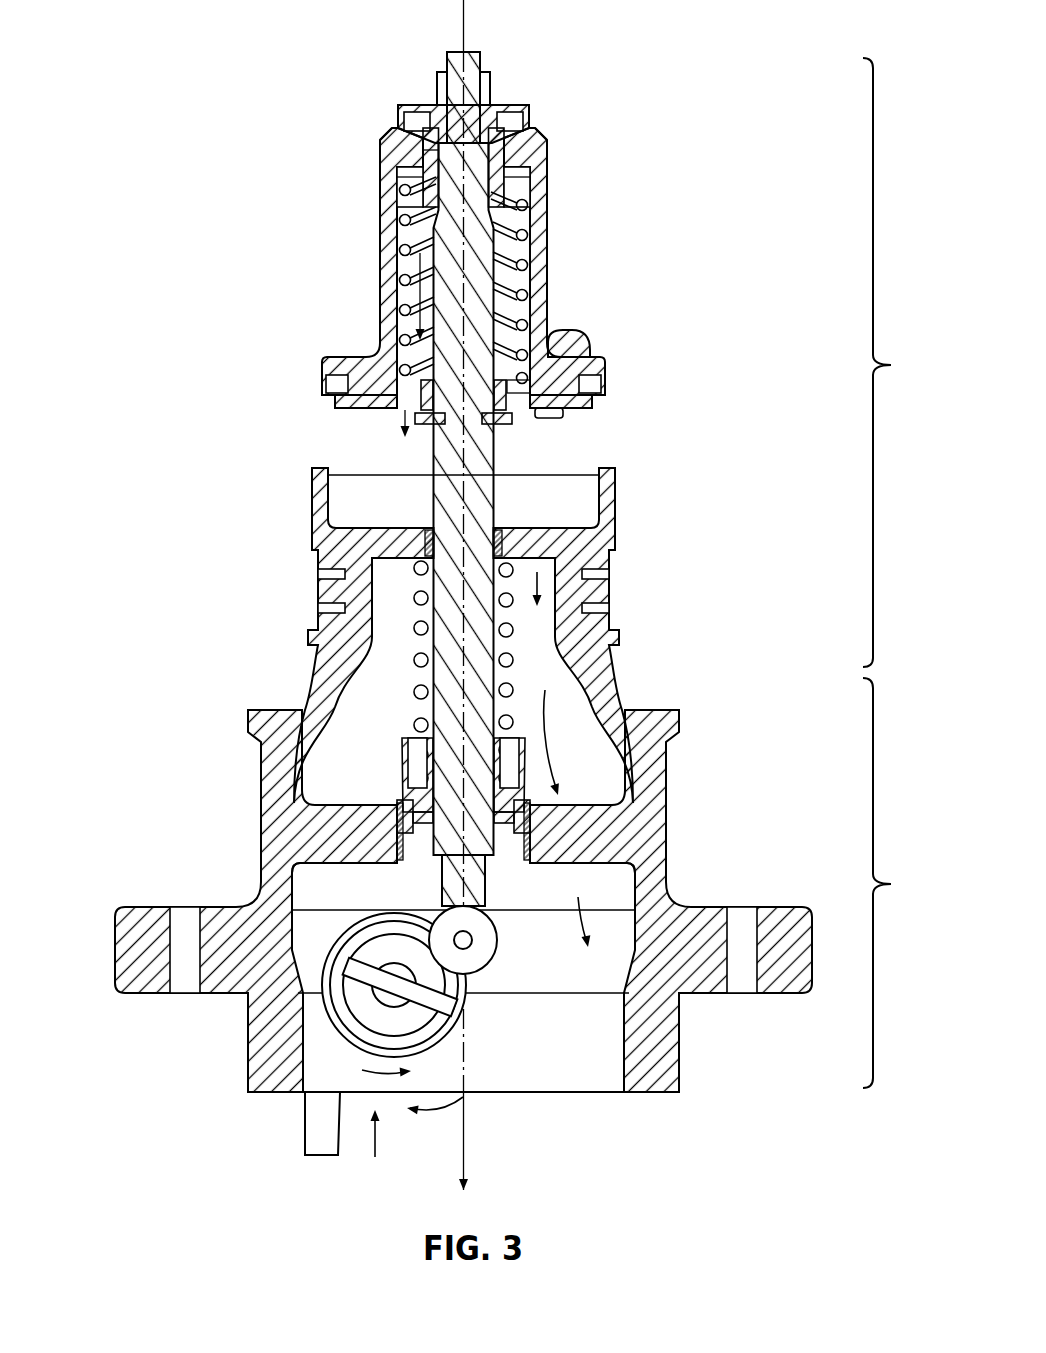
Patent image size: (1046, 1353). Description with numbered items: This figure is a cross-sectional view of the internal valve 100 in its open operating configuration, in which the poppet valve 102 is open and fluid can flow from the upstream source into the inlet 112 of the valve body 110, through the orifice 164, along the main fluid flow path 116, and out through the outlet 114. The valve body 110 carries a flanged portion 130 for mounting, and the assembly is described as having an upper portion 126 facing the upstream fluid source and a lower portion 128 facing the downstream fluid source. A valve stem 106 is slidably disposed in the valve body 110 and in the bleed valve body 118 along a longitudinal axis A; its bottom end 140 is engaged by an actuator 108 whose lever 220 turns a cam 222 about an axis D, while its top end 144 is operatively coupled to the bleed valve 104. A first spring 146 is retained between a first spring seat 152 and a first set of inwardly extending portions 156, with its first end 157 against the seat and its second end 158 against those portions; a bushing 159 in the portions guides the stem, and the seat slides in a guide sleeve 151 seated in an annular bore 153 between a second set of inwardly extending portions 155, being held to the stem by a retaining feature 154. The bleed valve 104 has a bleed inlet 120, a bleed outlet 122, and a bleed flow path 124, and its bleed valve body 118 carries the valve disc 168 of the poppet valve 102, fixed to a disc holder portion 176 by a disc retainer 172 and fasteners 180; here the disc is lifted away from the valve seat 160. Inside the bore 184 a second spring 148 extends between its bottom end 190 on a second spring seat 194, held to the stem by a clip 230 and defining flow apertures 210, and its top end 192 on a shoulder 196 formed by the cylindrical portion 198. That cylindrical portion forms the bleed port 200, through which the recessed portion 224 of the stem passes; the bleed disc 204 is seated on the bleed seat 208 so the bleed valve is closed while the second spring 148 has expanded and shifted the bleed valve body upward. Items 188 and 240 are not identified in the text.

The internal valve 100 is at (97, 98).
The poppet valve 102 is at (248, 465).
The bleed valve 104 is at (566, 50).
The valve stem 106 is at (438, 680).
The actuator 108 is at (375, 1149).
The valve body 110 is at (275, 715).
The inlet 112 is at (327, 458).
The outlet 114 is at (539, 1106).
The main fluid flow path 116 is at (538, 575).
The bleed valve body 118 is at (430, 225).
The bleed inlet 120 is at (542, 108).
The bleed outlet 122 is at (389, 425).
The bleed flow path 124 is at (397, 320).
The upper portion 126 is at (897, 362).
The lower portion 128 is at (897, 883).
The flanged portion 130 is at (140, 994).
The bottom end 140 is at (485, 907).
The top end 144 is at (457, 65).
The first spring 146 is at (414, 693).
The second spring 148 is at (400, 246).
The guide sleeve 151 is at (400, 830).
The first spring seat 152 is at (427, 815).
The annular bore 153 is at (400, 860).
The retaining feature 154 is at (511, 818).
The inwardly extending portions 155 is at (300, 868).
The inwardly extending portions 156 is at (562, 570).
The first end 157 is at (531, 772).
The second end 158 is at (520, 580).
The bushing 159 is at (424, 545).
The valve seat 160 is at (606, 474).
The orifice 164 is at (600, 461).
The valve disc 168 is at (580, 401).
The disc retainer 172 is at (600, 386).
The disc holder portion 176 is at (587, 358).
The fasteners 180 is at (566, 414).
The bore 184 is at (533, 280).
The lower groove 188 is at (345, 606).
The bottom end 190 is at (533, 366).
The top end 192 is at (547, 178).
The second spring seat 194 is at (512, 412).
The shoulder 196 is at (528, 204).
The cylindrical portion 198 is at (432, 176).
The bleed port 200 is at (427, 110).
The bleed disc 204 is at (500, 108).
The bleed seat 208 is at (536, 126).
The flow apertures 210 is at (335, 390).
The lever 220 is at (320, 1145).
The cam 222 is at (490, 950).
The recessed portion 224 is at (492, 163).
The clip 230 is at (502, 428).
The spring coil 240 is at (522, 253).
The longitudinal axis A is at (462, 18).
The axis D is at (393, 987).